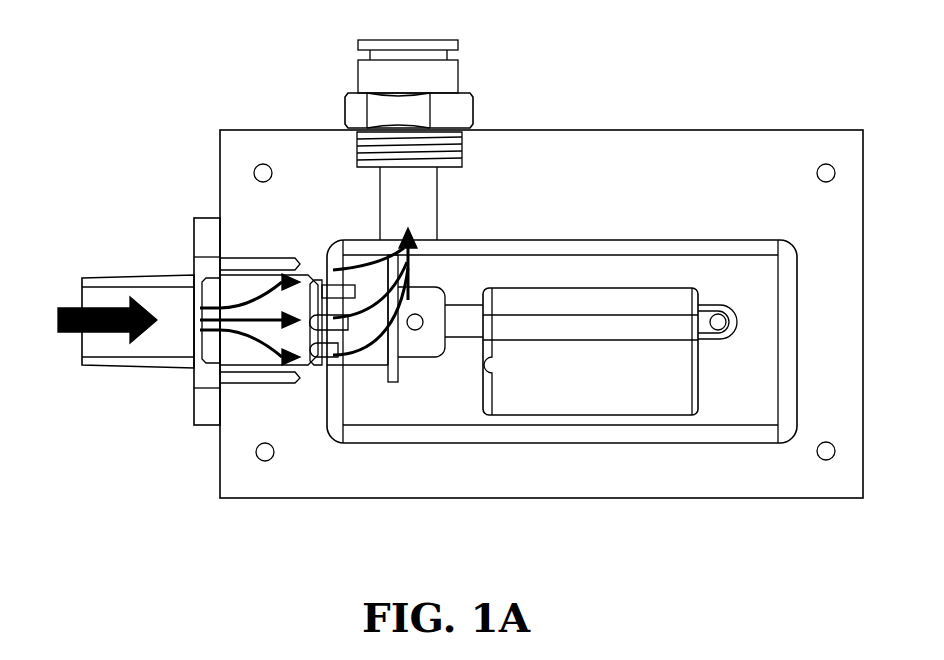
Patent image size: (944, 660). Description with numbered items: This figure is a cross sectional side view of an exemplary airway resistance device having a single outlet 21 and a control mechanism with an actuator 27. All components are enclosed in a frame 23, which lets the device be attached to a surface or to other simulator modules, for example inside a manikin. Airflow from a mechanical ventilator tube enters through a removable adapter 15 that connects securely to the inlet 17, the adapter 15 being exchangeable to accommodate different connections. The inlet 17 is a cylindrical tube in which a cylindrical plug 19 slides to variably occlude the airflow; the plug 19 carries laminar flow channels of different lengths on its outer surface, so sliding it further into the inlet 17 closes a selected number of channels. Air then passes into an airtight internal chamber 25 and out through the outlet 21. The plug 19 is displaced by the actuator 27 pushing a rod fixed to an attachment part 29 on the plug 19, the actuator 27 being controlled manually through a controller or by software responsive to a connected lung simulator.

The adapter 15 is at (118, 280).
The inlet 17 is at (259, 260).
The cylindrical plug 19 is at (363, 368).
The outlet 21 is at (362, 76).
The frame 23 is at (727, 130).
The airtight internal chamber 25 is at (730, 445).
The actuator 27 is at (607, 373).
The attachment part 29 is at (417, 350).